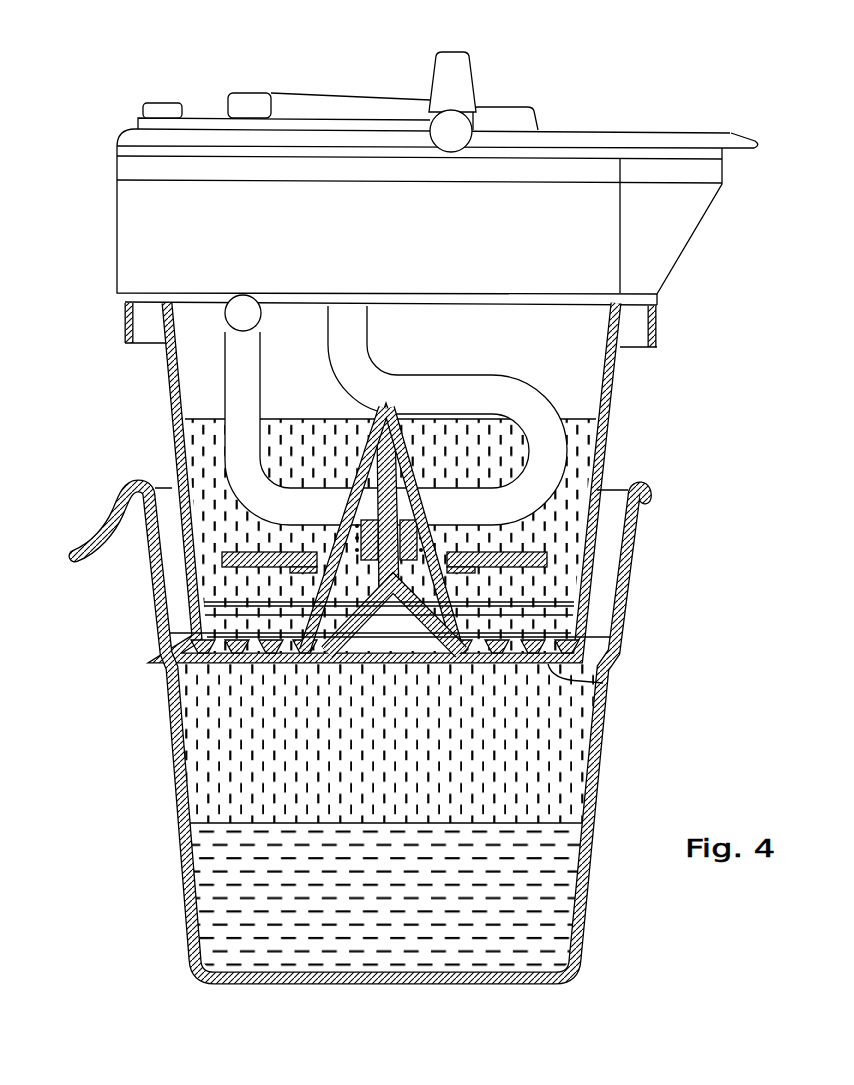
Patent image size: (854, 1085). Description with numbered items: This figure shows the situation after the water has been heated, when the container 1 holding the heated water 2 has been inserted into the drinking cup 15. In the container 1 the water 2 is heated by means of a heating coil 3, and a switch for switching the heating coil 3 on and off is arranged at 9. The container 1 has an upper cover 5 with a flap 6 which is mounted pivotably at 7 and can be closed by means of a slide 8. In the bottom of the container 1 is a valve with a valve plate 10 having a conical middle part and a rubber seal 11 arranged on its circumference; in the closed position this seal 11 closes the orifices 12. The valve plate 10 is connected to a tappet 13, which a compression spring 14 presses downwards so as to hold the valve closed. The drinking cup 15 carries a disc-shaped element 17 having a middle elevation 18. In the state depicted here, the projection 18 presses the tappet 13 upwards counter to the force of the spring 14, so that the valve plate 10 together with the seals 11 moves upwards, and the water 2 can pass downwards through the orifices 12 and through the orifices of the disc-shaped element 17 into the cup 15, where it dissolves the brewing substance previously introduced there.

The container 1 is at (613, 360).
The water 2 is at (580, 432).
The heating coil 3 is at (230, 381).
The upper cover 5 is at (117, 235).
The flap 6 is at (648, 130).
The pivot mounting 7 is at (453, 125).
The slide 8 is at (250, 93).
The switch 9 is at (160, 103).
The valve plate 10 is at (405, 538).
The rubber seal 11 is at (450, 557).
The orifices 12 is at (597, 633).
The tappet 13 is at (348, 582).
The compression spring 14 is at (355, 541).
The drinking cup 15 is at (175, 775).
The disc-shaped element 17 is at (603, 683).
The middle elevation 18 is at (583, 601).